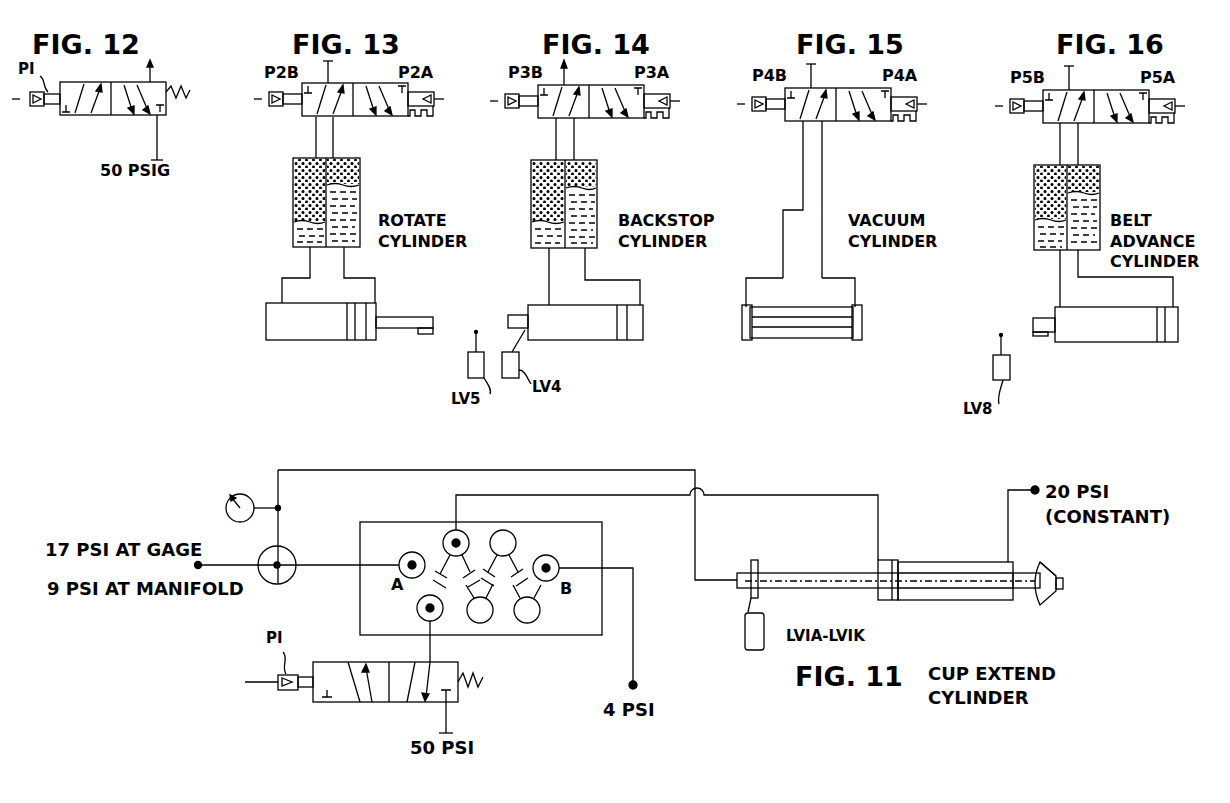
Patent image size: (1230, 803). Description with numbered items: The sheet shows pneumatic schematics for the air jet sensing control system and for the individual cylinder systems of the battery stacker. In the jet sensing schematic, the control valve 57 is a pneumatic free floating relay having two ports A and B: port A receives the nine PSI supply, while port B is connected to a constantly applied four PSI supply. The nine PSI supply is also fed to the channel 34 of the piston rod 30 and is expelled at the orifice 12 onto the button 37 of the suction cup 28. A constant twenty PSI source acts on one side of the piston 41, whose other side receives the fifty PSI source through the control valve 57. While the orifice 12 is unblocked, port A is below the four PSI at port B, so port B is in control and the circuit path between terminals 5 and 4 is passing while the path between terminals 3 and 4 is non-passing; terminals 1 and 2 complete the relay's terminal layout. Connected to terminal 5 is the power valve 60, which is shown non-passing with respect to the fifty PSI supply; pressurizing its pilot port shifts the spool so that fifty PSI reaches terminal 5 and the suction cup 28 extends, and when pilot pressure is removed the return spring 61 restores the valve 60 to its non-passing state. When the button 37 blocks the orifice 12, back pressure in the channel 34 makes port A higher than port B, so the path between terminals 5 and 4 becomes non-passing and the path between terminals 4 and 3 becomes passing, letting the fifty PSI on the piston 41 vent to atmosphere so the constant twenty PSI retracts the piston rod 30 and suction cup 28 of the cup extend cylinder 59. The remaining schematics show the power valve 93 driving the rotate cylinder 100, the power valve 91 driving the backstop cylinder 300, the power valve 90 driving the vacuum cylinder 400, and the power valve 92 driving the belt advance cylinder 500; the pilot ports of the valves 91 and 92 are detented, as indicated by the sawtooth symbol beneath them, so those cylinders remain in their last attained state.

In FIG. 12, the power valve 60 is at (118, 115).
In FIG. 11, the power valve 60 is at (347, 702).
In FIG. 11, the return spring 61 is at (473, 680).
In FIG. 11, the control valve 57 is at (604, 538).
In FIG. 11, the port 1 is at (545, 633).
In FIG. 11, the port 2 is at (509, 540).
In FIG. 11, the terminal 3 is at (485, 617).
In FIG. 11, the terminal 4 is at (447, 542).
In FIG. 11, the terminal 5 is at (434, 615).
In FIG. 11, the piston rod 30 is at (772, 571).
In FIG. 11, the channel 34 is at (810, 578).
In FIG. 11, the piston 41 is at (890, 560).
In FIG. 11, the cup extend cylinder 59 is at (993, 600).
In FIG. 11, the suction cup 28 is at (1046, 562).
In FIG. 11, the button 37 is at (1063, 583).
In FIG. 11, the orifice 12 is at (1038, 605).
In FIG. 13, the power valve 93 is at (382, 117).
In FIG. 14, the power valve 91 is at (617, 118).
In FIG. 15, the power valve 90 is at (867, 121).
In FIG. 16, the power valve 92 is at (1125, 123).
In FIG. 13, the rotate cylinder 100 is at (380, 308).
In FIG. 14, the backstop cylinder 300 is at (643, 310).
In FIG. 15, the vacuum cylinder 400 is at (862, 325).
In FIG. 16, the belt advance cylinder 500 is at (1117, 342).